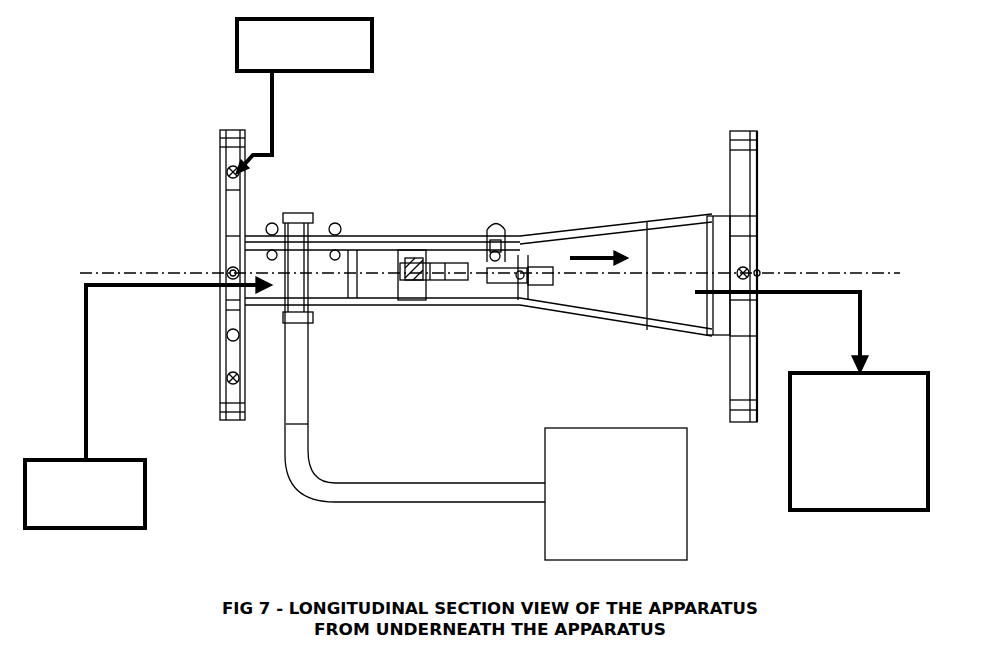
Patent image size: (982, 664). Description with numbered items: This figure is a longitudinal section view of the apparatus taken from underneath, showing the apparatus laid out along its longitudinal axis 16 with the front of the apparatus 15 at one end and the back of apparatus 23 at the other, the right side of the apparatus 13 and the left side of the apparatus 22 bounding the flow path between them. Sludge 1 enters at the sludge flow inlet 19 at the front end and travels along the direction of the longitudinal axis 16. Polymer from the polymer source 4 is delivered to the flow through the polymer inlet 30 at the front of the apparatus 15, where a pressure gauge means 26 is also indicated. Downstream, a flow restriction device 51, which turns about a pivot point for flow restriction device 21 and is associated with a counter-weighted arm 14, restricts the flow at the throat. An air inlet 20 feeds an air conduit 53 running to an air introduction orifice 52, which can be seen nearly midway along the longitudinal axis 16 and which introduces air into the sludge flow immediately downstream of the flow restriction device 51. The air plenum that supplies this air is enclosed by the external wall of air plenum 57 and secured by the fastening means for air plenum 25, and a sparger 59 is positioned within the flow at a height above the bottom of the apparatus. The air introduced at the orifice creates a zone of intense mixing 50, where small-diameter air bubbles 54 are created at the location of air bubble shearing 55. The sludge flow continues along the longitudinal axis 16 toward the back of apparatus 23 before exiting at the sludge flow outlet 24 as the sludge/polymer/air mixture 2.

The sludge 1 is at (60, 528).
The sludge/polymer/air mixture 2 is at (812, 510).
The polymer source 4 is at (372, 44).
The right side of the apparatus 13 is at (655, 220).
The counter-weighted arm 14 is at (675, 490).
The front of the apparatus 15 is at (218, 352).
The longitudinal axis 16 is at (117, 268).
The sludge flow inlet 19 is at (222, 270).
The air inlet 20 is at (538, 245).
The pivot point for flow restriction device 21 is at (296, 211).
The left side of the apparatus 22 is at (655, 330).
The back of apparatus 23 is at (737, 333).
The sludge flow outlet 24 is at (759, 272).
The fastening means for air plenum 25 is at (336, 228).
The pressure gauge means 26 is at (220, 282).
The polymer inlet 30 is at (224, 164).
The zone of intense mixing 50 is at (458, 290).
The flow restriction device 51 is at (393, 286).
The air introduction orifice 52 is at (426, 300).
The air conduit 53 is at (455, 238).
The air bubble 54 is at (597, 280).
The location of air bubble shearing 55 is at (429, 334).
The external wall of air plenum 57 is at (367, 234).
The sparger 59 is at (424, 262).